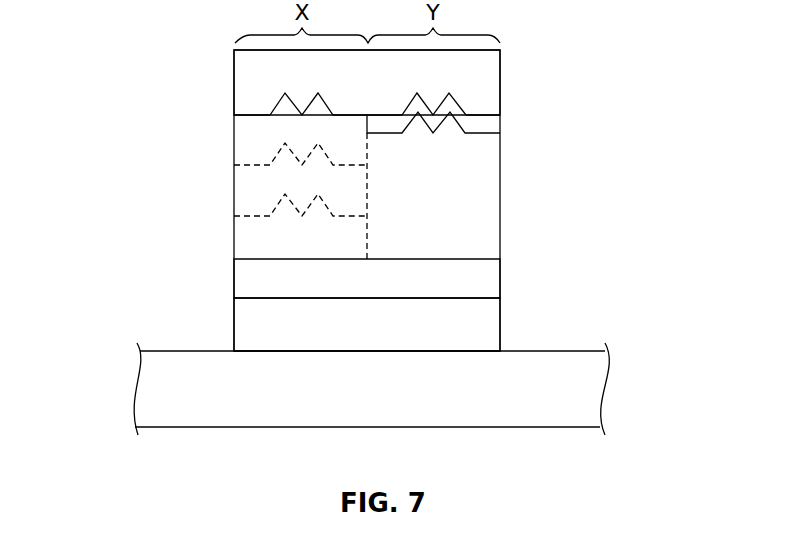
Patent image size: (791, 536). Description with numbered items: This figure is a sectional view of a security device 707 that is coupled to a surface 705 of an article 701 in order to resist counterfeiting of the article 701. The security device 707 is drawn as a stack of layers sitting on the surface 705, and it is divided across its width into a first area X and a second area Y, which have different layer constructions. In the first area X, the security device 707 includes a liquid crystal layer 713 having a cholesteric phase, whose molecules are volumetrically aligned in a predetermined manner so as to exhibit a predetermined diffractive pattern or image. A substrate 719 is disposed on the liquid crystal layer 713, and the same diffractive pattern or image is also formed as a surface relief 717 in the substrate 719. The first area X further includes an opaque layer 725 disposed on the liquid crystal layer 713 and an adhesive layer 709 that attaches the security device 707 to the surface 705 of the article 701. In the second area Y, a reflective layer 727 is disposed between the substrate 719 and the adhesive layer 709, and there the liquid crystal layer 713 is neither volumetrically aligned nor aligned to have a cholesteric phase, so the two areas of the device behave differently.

The article 701 is at (138, 319).
The surface 705 is at (590, 351).
The security device 707 is at (203, 130).
The adhesive layer 709 is at (500, 325).
The liquid crystal layer 713 is at (270, 185).
The surface relief 717 is at (270, 112).
The substrate 719 is at (500, 77).
The opaque layer 725 is at (234, 280).
The reflective layer 727 is at (500, 124).